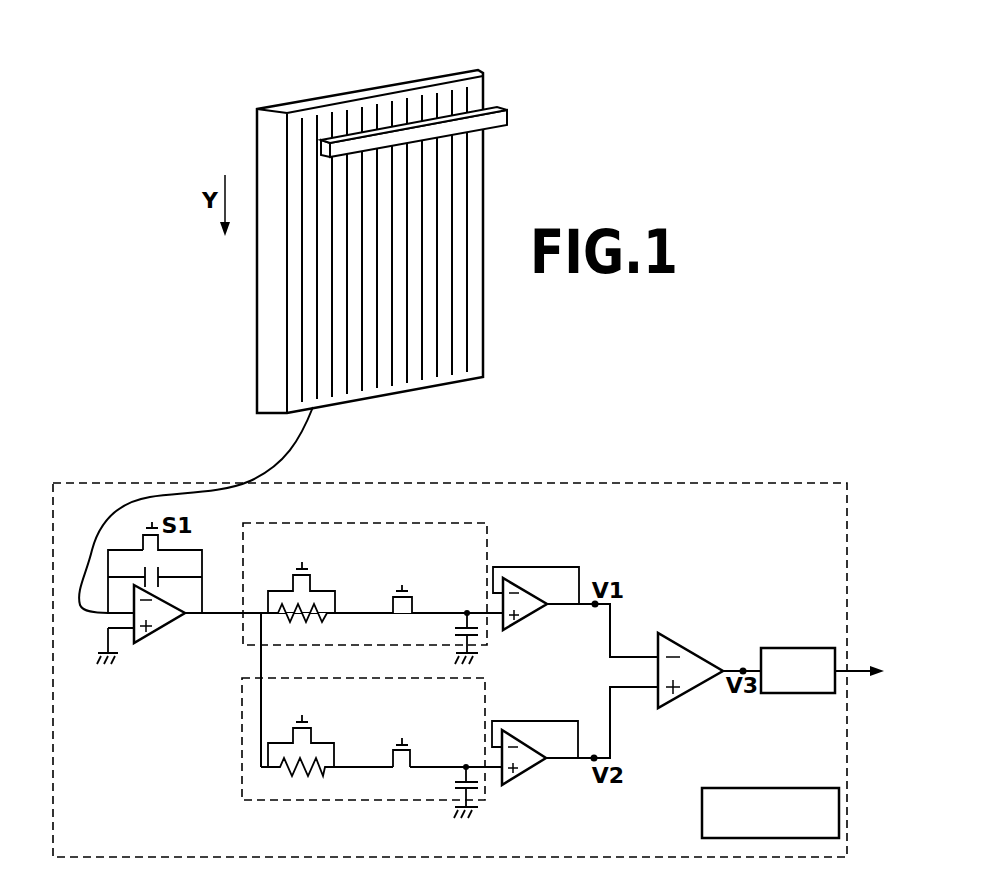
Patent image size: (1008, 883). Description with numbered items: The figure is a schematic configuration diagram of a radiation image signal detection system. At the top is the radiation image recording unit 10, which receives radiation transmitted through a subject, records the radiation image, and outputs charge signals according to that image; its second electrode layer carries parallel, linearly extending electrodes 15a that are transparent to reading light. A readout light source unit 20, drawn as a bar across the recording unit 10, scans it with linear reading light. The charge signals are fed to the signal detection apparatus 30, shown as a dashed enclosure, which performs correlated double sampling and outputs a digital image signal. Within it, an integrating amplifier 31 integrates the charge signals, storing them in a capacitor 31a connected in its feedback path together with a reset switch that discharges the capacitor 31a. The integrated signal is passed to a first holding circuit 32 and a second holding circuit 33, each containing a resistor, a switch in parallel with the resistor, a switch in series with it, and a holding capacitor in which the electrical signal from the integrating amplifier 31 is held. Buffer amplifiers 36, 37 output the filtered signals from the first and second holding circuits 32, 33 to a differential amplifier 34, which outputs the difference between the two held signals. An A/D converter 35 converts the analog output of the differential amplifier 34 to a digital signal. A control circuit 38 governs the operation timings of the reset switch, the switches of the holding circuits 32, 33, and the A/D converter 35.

The radiation image recording unit 10 is at (470, 72).
The linear electrode 15a is at (332, 130).
The readout light source unit 20 is at (508, 112).
The signal detection apparatus 30 is at (738, 483).
The integrating amplifier 31 is at (148, 647).
The capacitor 31a is at (172, 568).
The first holding circuit 32 is at (450, 523).
The second holding circuit 33 is at (242, 756).
The differential amplifier 34 is at (678, 641).
The A/D converter 35 is at (795, 648).
The buffer amplifier 36 is at (537, 630).
The buffer amplifier 37 is at (530, 784).
The control circuit 38 is at (785, 788).